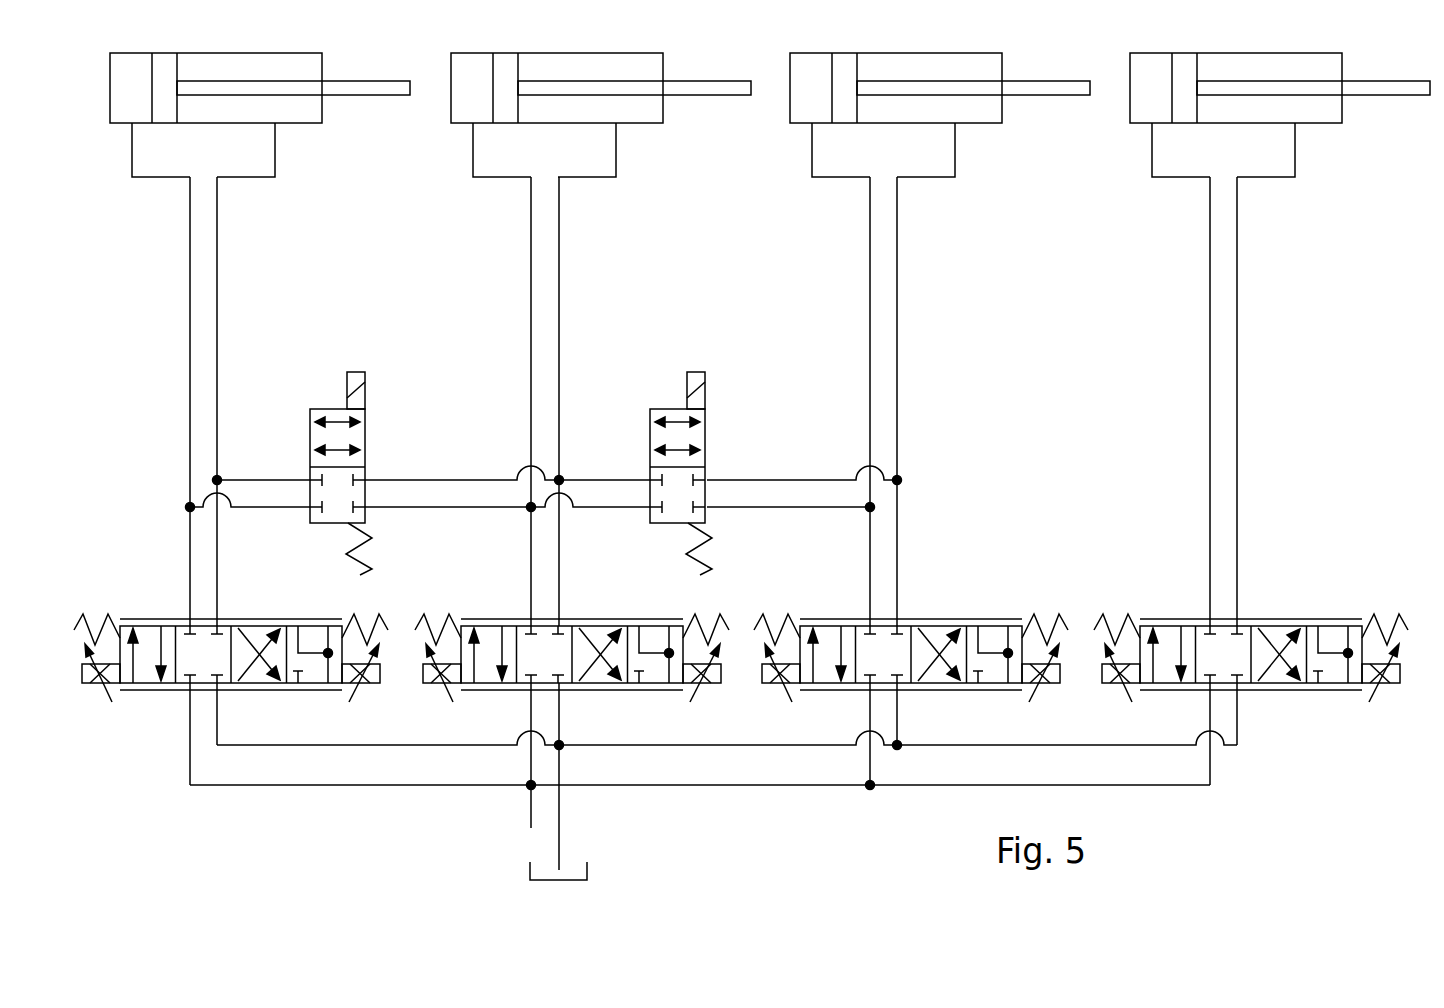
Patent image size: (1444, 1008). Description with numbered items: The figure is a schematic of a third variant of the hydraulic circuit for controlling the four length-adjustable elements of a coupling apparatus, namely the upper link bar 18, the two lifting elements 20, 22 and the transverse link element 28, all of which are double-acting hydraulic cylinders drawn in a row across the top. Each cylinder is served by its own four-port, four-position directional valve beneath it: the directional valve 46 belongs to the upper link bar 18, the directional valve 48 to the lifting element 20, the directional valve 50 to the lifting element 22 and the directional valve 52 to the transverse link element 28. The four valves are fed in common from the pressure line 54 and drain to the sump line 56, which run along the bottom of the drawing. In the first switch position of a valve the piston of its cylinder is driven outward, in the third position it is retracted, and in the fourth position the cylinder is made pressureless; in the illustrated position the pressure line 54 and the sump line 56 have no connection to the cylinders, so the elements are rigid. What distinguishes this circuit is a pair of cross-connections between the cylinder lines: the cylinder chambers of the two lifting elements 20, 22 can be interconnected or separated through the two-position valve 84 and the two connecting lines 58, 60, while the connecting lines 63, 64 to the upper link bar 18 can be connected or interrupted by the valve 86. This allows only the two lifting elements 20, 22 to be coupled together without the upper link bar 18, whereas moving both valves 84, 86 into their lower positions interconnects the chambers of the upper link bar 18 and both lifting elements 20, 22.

The length-adjustable upper link bar 18 is at (215, 123).
The length-adjustable lifting element 20 is at (556, 123).
The length-adjustable lifting element 22 is at (895, 123).
The transverse link element 28 is at (1235, 123).
The 4/4-way valve 46 is at (147, 692).
The 4/4-way valve 48 is at (493, 618).
The 4/4-way valve 50 is at (973, 618).
The 4/4-way valve 52 is at (1315, 691).
The pressure line 54 is at (530, 805).
The sump line 56 is at (560, 828).
The connecting line 58 is at (611, 480).
The connecting line 60 is at (815, 507).
The connecting line 63 is at (455, 480).
The connecting line 64 is at (440, 510).
The 4/2-way valve 84 is at (707, 438).
The valve 86 is at (365, 437).